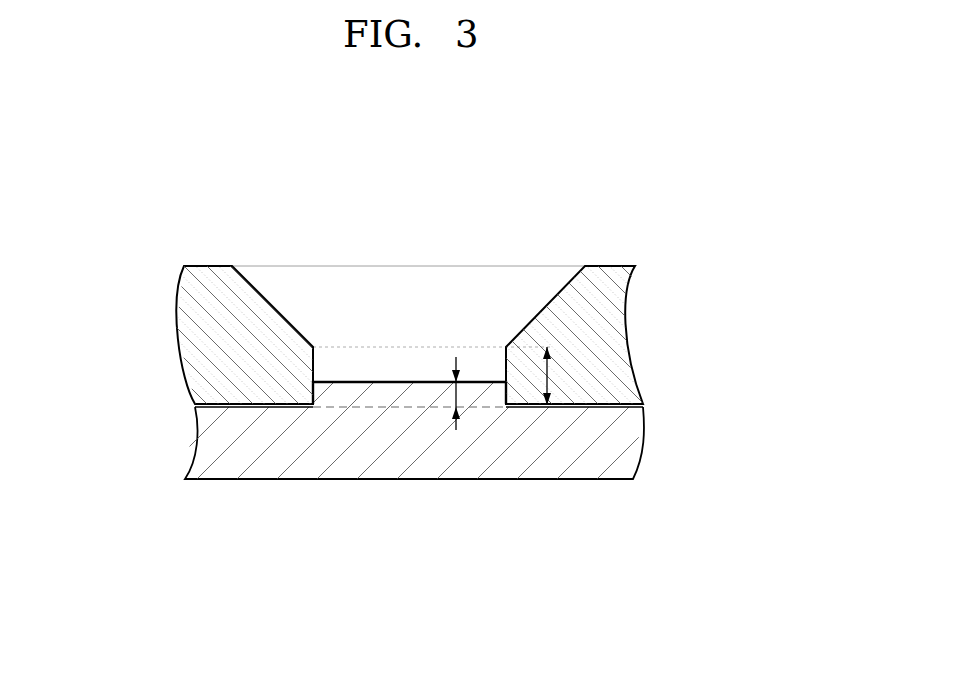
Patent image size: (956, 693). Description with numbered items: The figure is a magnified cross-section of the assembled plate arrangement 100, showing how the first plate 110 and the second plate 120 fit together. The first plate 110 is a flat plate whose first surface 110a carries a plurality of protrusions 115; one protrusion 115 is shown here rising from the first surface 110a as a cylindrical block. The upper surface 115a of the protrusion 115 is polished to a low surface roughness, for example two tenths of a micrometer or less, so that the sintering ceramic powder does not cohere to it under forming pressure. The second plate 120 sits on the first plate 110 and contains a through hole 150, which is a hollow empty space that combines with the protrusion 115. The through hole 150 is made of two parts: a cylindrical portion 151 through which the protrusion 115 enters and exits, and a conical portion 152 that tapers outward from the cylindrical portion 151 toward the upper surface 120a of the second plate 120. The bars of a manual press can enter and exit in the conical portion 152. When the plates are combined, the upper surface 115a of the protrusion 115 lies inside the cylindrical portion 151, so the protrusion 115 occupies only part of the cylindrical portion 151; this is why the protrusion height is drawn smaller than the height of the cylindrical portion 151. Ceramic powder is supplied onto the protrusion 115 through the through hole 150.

The display apparatus 100 is at (573, 218).
The first plate 110 is at (633, 443).
The first surface 110a is at (600, 407).
The protrusion 115 is at (395, 393).
The upper surface of protrusion 115a is at (380, 380).
The second plate 120 is at (605, 335).
The upper surface of second plate 120a is at (612, 266).
The through hole 150 is at (453, 194).
The cylindrical portion 151 is at (420, 365).
The conical portion 152 is at (448, 308).